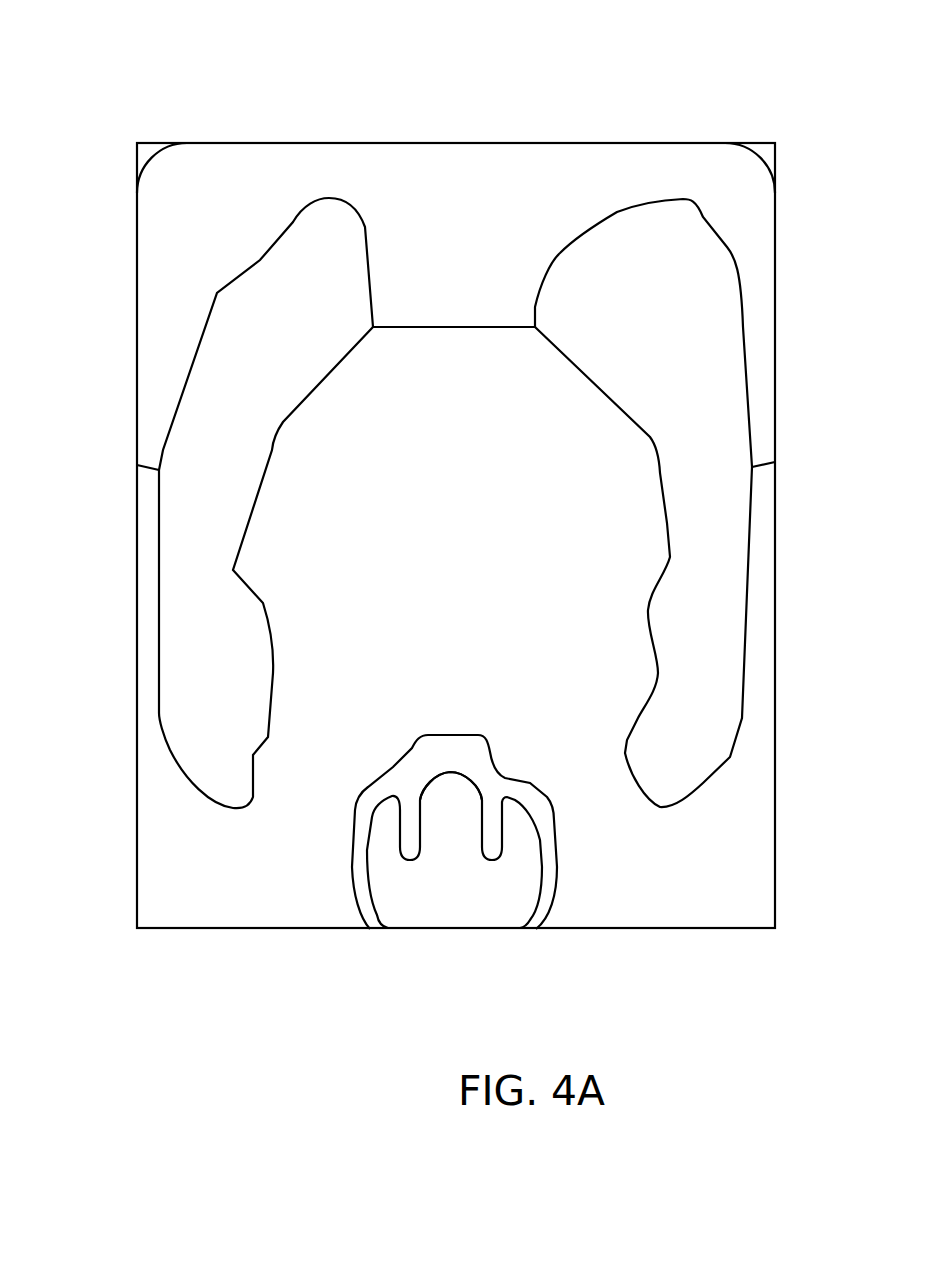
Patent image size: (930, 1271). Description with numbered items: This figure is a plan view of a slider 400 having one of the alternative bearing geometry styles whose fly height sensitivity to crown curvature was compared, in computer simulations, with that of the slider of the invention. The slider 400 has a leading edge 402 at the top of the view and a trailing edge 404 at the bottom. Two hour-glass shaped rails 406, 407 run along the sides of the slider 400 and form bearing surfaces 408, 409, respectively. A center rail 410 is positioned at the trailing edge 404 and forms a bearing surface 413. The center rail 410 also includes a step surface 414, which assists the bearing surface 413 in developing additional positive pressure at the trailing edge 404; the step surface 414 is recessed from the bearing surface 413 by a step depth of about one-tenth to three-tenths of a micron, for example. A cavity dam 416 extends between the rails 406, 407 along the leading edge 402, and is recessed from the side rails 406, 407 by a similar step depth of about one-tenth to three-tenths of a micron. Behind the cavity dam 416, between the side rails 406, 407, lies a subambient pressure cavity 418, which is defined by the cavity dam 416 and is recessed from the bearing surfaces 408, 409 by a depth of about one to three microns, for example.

The slider 400 is at (386, 108).
The leading edge 402 is at (616, 143).
The trailing edge 404 is at (648, 928).
The hour-glass shaped rail 406 is at (193, 487).
The hour-glass shaped rail 407 is at (708, 386).
The bearing surface 408 is at (210, 643).
The bearing surface 409 is at (712, 615).
The center rail 410 is at (442, 782).
The bearing surface 413 is at (453, 882).
The step surface 414 is at (458, 748).
The cavity dam 416 is at (478, 248).
The subambient pressure cavity 418 is at (462, 500).